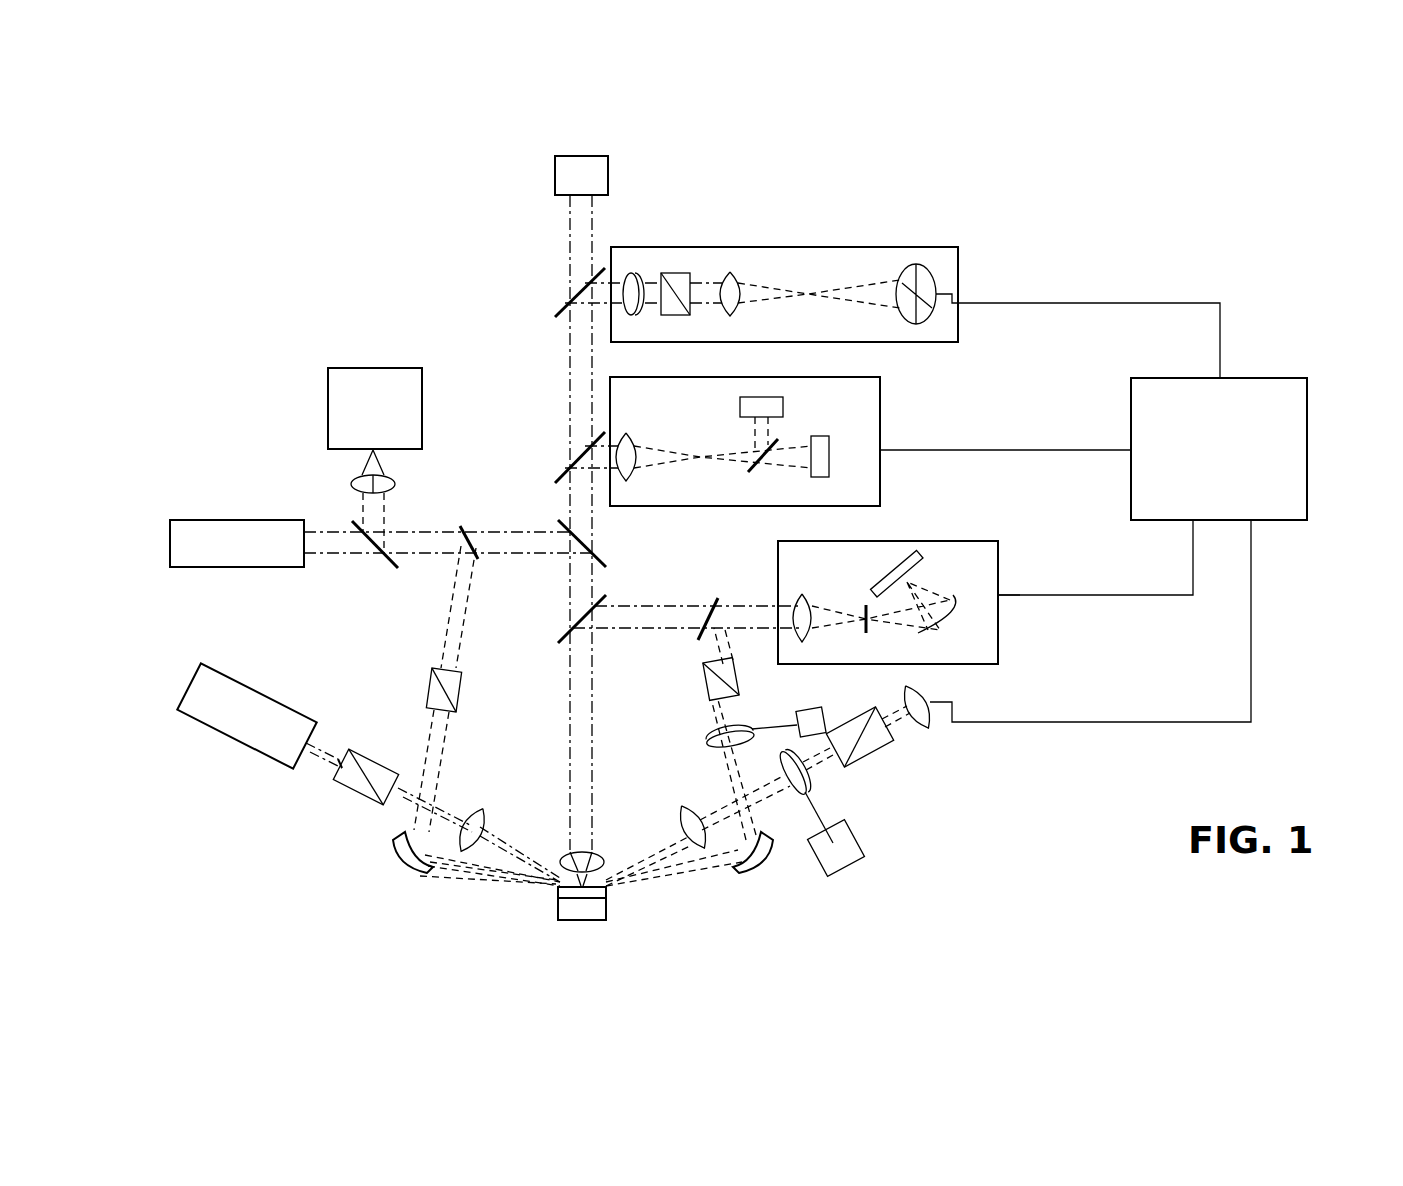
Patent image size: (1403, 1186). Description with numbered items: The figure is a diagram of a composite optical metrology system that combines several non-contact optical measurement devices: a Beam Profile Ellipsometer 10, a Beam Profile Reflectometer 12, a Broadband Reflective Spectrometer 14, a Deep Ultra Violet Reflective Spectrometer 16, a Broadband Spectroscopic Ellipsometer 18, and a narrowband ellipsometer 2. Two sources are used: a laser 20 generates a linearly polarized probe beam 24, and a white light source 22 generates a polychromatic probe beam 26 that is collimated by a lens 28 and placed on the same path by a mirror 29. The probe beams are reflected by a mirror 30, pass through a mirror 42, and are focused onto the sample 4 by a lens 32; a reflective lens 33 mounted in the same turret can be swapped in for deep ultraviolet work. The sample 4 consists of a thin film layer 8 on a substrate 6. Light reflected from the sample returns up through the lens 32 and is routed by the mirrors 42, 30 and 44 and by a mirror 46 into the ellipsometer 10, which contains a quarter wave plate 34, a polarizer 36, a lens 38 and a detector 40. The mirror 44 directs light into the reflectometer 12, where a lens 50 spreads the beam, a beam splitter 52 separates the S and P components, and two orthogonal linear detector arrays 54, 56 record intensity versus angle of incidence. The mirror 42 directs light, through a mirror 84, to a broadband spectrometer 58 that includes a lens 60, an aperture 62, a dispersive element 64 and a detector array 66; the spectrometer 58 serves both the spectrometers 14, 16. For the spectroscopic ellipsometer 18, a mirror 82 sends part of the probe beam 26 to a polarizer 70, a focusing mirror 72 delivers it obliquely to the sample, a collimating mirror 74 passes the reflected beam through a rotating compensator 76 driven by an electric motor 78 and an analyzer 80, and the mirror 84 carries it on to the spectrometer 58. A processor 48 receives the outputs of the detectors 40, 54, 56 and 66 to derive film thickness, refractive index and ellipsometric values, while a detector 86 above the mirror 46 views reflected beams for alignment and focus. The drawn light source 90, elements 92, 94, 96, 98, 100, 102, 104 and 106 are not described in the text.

The narrowband ellipsometer 2 is at (318, 773).
The sample 4 is at (556, 905).
The substrate 6 is at (606, 915).
The thin film layer 8 is at (606, 892).
The Beam Profile Ellipsometer 10 is at (808, 247).
The Beam Profile Reflectometer 12 is at (880, 400).
The Broadband Reflective Spectrometer 14 is at (895, 541).
The Deep Ultra Violet Reflective Spectrometer 16 is at (985, 582).
The Broadband Spectroscopic Ellipsometer 18 is at (478, 880).
The laser 20 is at (205, 567).
The white light source 22 is at (378, 368).
The probe beam 24 is at (360, 557).
The probe beam 26 is at (385, 500).
The lens 28 is at (395, 480).
The mirror 29 is at (388, 566).
The mirror 30 is at (606, 560).
The lens 32 is at (600, 858).
The lens 33 is at (614, 838).
The quarter wave plate 34 is at (633, 272).
The polarizer 36 is at (673, 273).
The lens 38 is at (735, 275).
The detector 40 is at (925, 270).
The mirror 42 is at (562, 638).
The mirror 44 is at (558, 468).
The mirror 46 is at (558, 298).
The processor 48 is at (1219, 449).
The lens 50 is at (630, 435).
The beam splitter 52 is at (750, 470).
The linear detector array 54 is at (829, 455).
The linear detector array 56 is at (783, 410).
The broadband spectrometer 58 is at (1000, 553).
The lens 60 is at (808, 598).
The aperture 62 is at (868, 633).
The dispersive element 64 is at (945, 620).
The detector array 66 is at (923, 565).
The polarizer 70 is at (458, 690).
The focusing mirror 72 is at (400, 857).
The collimating mirror 74 is at (758, 868).
The rotating compensator 76 is at (712, 737).
The electric motor 78 is at (806, 708).
The analyzer 80 is at (738, 678).
The mirror 82 is at (466, 528).
The mirror 84 is at (715, 598).
The detector 86 is at (608, 172).
The light source 90 is at (205, 712).
The polarizer 92 is at (362, 800).
The lens 94 is at (480, 815).
The lens 96 is at (693, 812).
The lens 98 is at (808, 776).
The detector 100 is at (852, 834).
The polarizer 102 is at (870, 757).
The lens 104 is at (922, 722).
The aperture 106 is at (330, 752).